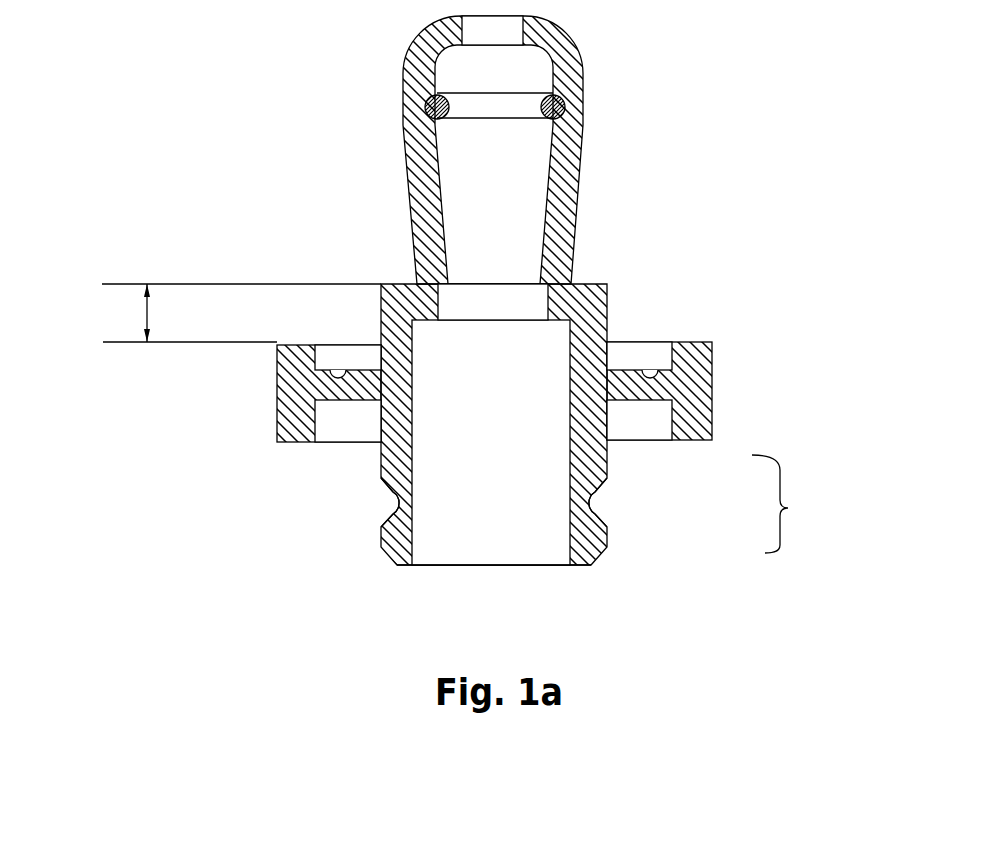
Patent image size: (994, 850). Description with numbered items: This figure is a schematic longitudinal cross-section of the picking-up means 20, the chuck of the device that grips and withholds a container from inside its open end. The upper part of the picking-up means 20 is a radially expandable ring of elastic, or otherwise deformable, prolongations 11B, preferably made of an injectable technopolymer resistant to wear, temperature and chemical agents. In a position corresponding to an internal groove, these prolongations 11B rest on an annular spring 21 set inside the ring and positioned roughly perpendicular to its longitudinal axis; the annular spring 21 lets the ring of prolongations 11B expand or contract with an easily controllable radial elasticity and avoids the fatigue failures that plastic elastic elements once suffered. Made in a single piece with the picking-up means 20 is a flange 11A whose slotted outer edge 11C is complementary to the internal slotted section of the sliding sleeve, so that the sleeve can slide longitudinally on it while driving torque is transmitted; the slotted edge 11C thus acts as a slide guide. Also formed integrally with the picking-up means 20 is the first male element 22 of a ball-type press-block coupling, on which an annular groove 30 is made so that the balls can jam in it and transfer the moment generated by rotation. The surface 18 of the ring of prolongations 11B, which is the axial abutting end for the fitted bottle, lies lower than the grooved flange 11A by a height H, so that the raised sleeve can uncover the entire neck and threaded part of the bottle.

The picking-up means 20 is at (237, 502).
The elastic prolongations 11B is at (582, 157).
The annular spring 21 is at (480, 120).
The surface 18 is at (580, 284).
The annular groove 30 is at (395, 507).
The first male element 22 is at (788, 508).
The flange 11A is at (343, 403).
The slotted outer edge 11C is at (712, 388).
The height H is at (143, 315).